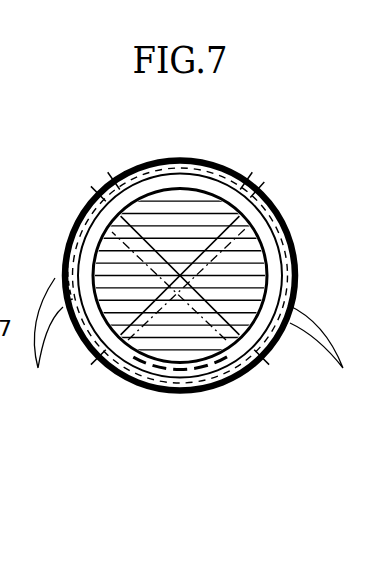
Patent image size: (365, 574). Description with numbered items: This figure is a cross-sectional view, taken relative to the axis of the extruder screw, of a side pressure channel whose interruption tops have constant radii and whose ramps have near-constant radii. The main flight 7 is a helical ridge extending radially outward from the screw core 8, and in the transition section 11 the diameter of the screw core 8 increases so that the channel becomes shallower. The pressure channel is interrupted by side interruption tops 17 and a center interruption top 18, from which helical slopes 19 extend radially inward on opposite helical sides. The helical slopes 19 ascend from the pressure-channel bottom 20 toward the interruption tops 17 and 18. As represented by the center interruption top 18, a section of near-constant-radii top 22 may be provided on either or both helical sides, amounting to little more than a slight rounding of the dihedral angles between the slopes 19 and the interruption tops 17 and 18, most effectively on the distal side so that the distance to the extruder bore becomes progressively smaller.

The main flight 7 is at (152, 160).
The screw core 8 is at (247, 248).
The transition section 11 is at (116, 361).
The side interruption tops 17 is at (36, 272).
The center interruption top 18 is at (185, 172).
The helical slopes 19 is at (192, 337).
The pressure-channel bottom 20 is at (207, 362).
The near-constant-radii top 22 is at (103, 190).